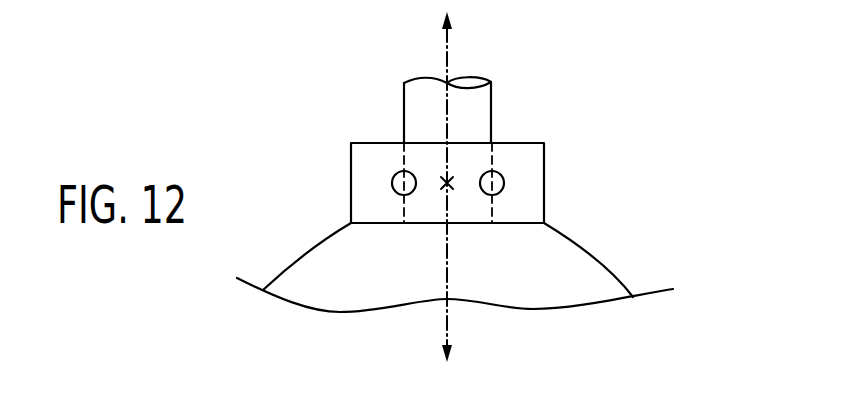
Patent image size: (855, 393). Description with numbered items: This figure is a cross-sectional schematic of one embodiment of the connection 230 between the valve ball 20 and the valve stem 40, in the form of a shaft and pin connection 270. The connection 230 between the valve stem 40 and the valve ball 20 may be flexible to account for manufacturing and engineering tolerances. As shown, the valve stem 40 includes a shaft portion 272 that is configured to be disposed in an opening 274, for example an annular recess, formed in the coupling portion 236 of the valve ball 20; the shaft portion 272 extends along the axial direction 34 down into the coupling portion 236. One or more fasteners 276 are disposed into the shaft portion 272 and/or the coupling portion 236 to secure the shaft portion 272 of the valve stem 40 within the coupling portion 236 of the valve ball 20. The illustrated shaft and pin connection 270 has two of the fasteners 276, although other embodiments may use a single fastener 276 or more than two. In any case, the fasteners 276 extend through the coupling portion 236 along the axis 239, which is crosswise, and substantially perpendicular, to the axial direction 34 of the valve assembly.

The valve ball 20 is at (556, 262).
The axial direction 34 is at (448, 326).
The valve stem 40 is at (472, 112).
The connection 230 is at (340, 146).
The coupling portion 236 is at (372, 178).
The axis 239 is at (457, 180).
The shaft and pin connection 270 is at (577, 157).
The shaft portion 272 is at (403, 98).
The opening 274 is at (388, 128).
The fasteners 276 is at (408, 195).